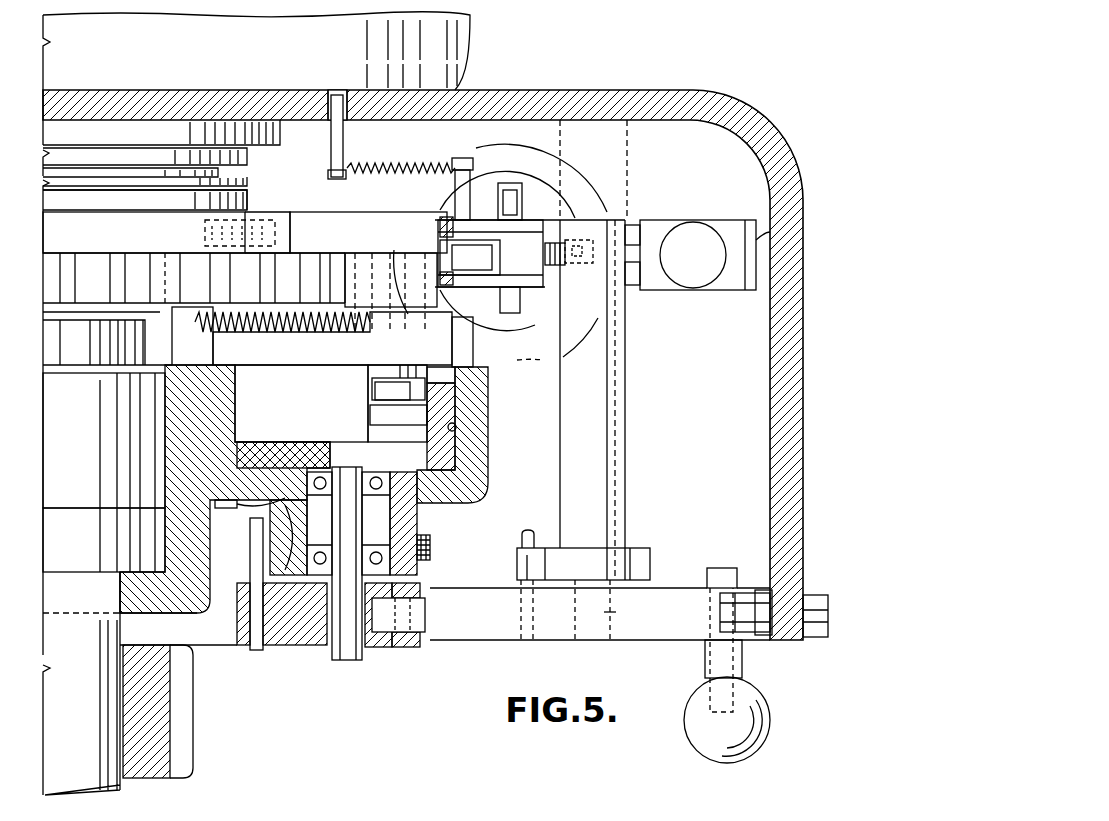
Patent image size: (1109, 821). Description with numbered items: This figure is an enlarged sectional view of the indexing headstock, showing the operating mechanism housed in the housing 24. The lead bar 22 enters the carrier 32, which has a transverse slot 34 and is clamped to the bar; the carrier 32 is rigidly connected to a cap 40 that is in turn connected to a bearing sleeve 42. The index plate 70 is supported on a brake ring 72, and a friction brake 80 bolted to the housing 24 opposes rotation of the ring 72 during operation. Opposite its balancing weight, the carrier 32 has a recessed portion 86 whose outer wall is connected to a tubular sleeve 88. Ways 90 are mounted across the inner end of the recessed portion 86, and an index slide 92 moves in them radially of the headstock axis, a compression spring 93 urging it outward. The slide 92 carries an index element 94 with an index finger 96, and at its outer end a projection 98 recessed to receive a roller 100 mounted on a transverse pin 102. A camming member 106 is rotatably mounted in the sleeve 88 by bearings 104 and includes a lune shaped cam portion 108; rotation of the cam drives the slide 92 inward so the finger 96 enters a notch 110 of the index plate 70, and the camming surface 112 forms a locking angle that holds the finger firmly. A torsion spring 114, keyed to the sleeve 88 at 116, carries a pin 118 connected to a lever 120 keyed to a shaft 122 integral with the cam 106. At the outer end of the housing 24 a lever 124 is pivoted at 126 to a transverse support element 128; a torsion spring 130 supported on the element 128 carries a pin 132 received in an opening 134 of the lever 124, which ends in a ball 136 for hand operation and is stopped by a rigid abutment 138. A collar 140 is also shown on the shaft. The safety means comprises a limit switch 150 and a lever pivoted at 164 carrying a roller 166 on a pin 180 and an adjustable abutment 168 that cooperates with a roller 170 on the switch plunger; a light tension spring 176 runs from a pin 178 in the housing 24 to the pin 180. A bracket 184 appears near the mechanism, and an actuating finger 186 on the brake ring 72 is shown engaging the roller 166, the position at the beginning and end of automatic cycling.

The lead bar 22 is at (118, 793).
The housing 24 is at (770, 506).
The carrier 32 is at (327, 489).
The transverse slot 34 is at (168, 613).
The cap 40 is at (104, 540).
The bearing sleeve 42 is at (104, 440).
The index plate 70 is at (135, 272).
The brake ring 72 is at (182, 270).
The friction brake 80 is at (254, 184).
The recessed portion 86 is at (470, 432).
The tubular sleeve 88 is at (400, 510).
The ways 90 is at (460, 351).
The index plunger or slide 92 is at (318, 368).
The compression spring 93 is at (270, 330).
The index element 94 is at (500, 300).
The index finger 96 is at (367, 265).
The projection 98 is at (360, 420).
The roller 100 is at (398, 392).
The transversely extending pin 102 is at (395, 425).
The bearings 104 is at (248, 509).
The camming member 106 is at (262, 450).
The lune shaped cam portion 108 is at (470, 388).
The notch 110 is at (312, 275).
The camming surface 112 is at (470, 408).
The torsion spring 114 is at (430, 546).
The key 116 is at (300, 540).
The pin 118 is at (250, 568).
The lever 120 is at (245, 648).
The shaft 122 is at (350, 662).
The lever 124 is at (685, 598).
The pivot 126 is at (618, 618).
The transverse support element 128 is at (625, 420).
The torsion spring 130 is at (543, 547).
The pin 132 is at (517, 586).
The opening 134 is at (532, 606).
The ball 136 is at (762, 742).
The rigid abutment 138 is at (740, 640).
The collar 140 is at (425, 632).
The limit switch 150 is at (740, 292).
The pivot 164 is at (560, 186).
The roller 166 is at (470, 257).
The adjustable abutment 168 is at (548, 262).
The roller 170 is at (575, 240).
The tension spring 176 is at (416, 163).
The pin 178 is at (347, 140).
The pin 180 is at (468, 196).
The bracket 184 is at (440, 246).
The actuating finger 186 is at (378, 224).